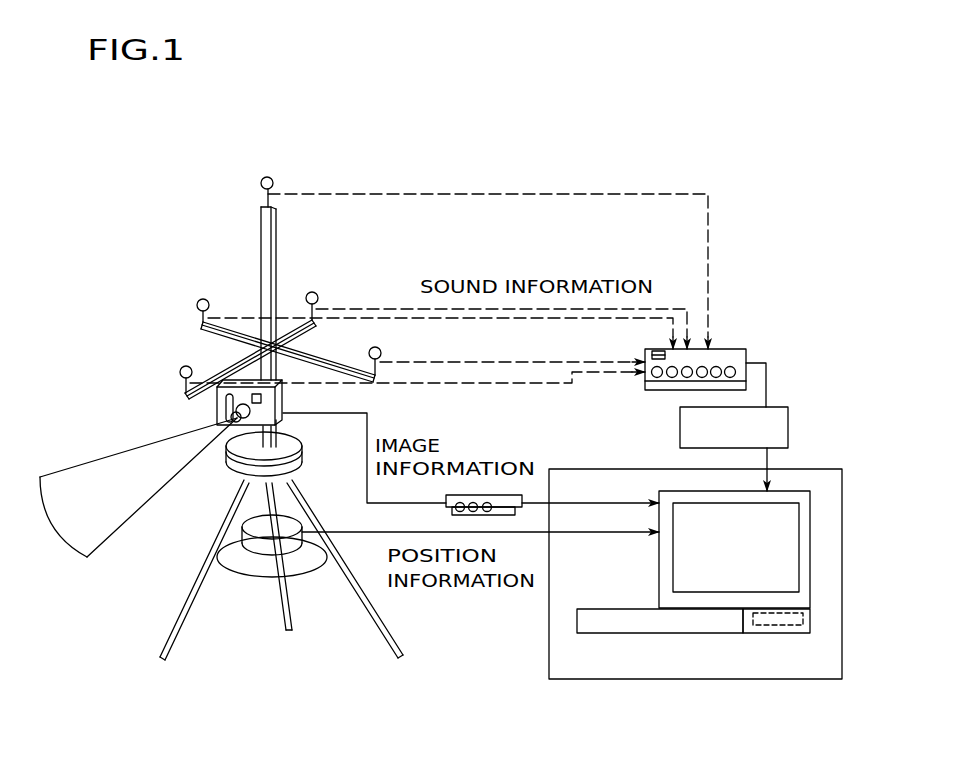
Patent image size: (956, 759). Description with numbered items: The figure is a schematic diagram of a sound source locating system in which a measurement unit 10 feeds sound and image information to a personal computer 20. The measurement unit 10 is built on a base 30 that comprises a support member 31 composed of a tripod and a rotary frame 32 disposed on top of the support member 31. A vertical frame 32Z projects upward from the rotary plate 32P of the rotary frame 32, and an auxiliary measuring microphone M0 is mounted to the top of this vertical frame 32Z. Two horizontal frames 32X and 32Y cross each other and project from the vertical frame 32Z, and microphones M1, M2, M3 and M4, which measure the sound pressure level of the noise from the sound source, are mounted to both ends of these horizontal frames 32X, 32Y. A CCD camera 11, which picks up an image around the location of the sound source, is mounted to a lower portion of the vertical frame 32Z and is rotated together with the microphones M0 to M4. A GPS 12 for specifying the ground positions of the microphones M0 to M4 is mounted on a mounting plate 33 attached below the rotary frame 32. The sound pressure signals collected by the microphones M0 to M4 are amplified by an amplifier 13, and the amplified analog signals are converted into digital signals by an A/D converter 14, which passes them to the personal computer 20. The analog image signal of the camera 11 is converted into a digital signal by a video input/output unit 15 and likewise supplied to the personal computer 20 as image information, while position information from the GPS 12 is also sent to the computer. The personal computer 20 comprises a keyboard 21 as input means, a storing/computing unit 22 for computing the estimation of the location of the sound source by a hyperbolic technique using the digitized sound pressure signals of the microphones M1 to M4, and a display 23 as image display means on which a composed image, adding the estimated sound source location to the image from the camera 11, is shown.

The measurement unit 10 is at (205, 283).
The CCD camera 11 is at (215, 409).
The GPS 12 is at (270, 533).
The amplifier 13 is at (735, 350).
The A/D converter 14 is at (777, 407).
The video input/output unit 15 is at (470, 497).
The personal computer 20 is at (808, 468).
The keyboard 21 is at (645, 617).
The storing/computing unit 22 is at (812, 615).
The display 23 is at (787, 547).
The base 30 is at (187, 605).
The support member 31 is at (378, 603).
The rotary frame 32 is at (248, 455).
The mounting plate 33 is at (298, 563).
The horizontal frame 32X is at (335, 368).
The horizontal frame 32Y is at (216, 374).
The vertical frame 32Z is at (272, 265).
The rotary plate 32P is at (292, 447).
The auxiliary measuring microphone M0 is at (272, 180).
The microphone M1 is at (381, 350).
The microphone M2 is at (320, 294).
The microphone M3 is at (198, 303).
The microphone M4 is at (180, 371).